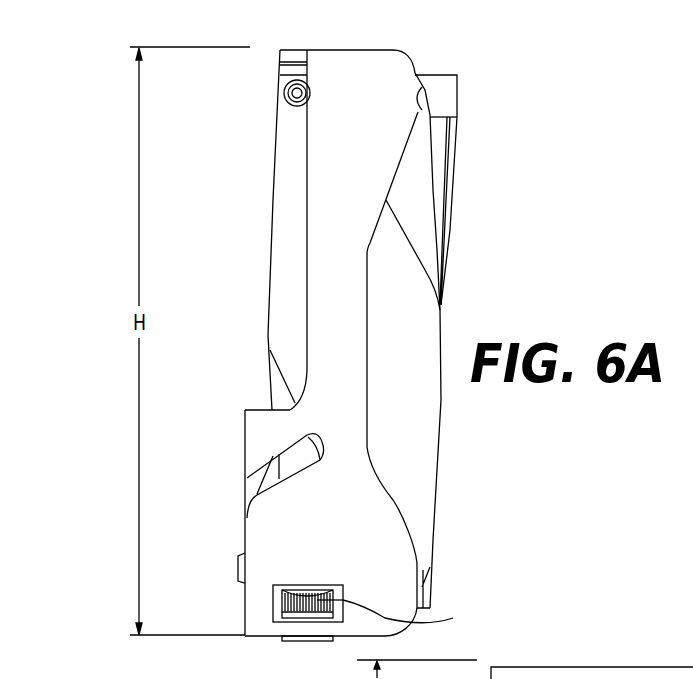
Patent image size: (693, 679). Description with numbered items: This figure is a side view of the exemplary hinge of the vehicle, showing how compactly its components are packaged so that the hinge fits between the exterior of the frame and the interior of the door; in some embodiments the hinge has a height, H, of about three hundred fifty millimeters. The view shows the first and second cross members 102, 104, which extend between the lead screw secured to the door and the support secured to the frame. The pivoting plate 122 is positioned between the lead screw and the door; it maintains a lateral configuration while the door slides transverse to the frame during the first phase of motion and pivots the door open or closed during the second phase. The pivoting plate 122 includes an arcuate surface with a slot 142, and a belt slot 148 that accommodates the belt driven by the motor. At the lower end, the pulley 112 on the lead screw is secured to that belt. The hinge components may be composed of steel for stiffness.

The first cross member 102 is at (420, 190).
The second cross member 104 is at (422, 393).
The pivoting plate 122 is at (367, 145).
The slot 142 is at (238, 494).
The belt slot 148 is at (272, 605).
The pulley 112 is at (403, 612).